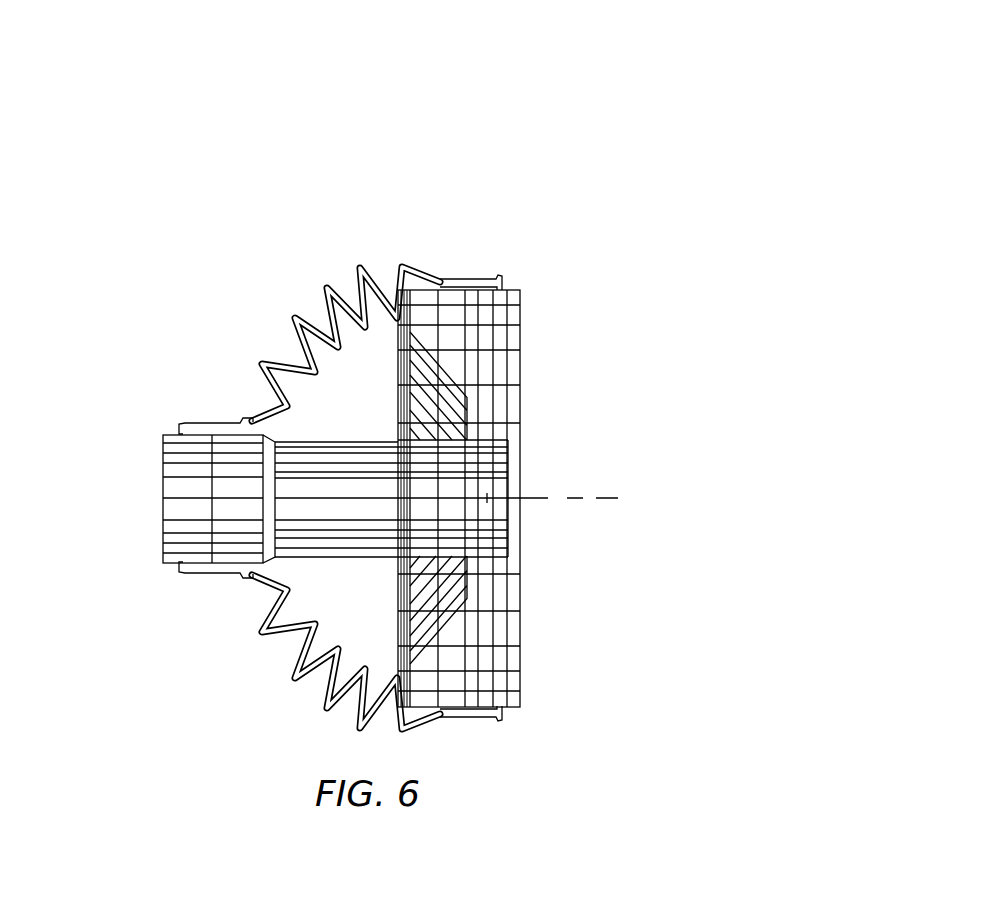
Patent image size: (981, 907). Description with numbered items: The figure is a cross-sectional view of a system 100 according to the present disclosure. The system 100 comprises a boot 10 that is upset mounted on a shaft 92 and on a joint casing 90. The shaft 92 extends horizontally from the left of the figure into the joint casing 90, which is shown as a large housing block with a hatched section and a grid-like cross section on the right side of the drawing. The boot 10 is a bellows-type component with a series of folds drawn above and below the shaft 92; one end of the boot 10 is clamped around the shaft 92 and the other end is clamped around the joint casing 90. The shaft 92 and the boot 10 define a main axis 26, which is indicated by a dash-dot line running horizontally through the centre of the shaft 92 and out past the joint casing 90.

The system 100 is at (359, 385).
The boot 10 is at (305, 210).
The housing / hub 90 is at (538, 309).
The shaft 92 is at (150, 497).
The main axis 26 is at (589, 466).